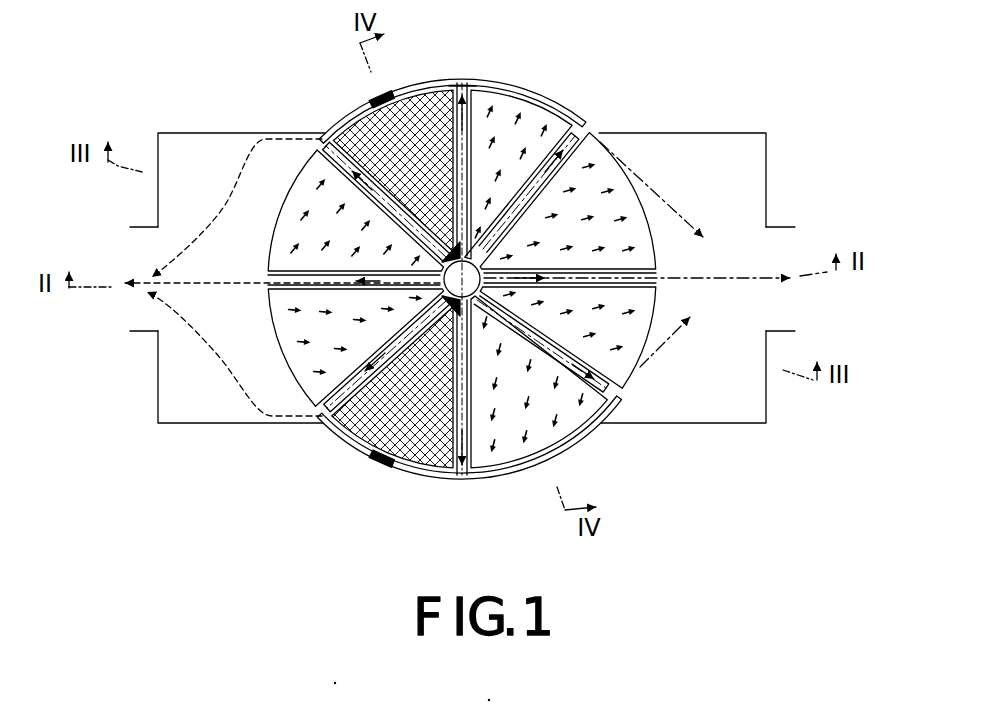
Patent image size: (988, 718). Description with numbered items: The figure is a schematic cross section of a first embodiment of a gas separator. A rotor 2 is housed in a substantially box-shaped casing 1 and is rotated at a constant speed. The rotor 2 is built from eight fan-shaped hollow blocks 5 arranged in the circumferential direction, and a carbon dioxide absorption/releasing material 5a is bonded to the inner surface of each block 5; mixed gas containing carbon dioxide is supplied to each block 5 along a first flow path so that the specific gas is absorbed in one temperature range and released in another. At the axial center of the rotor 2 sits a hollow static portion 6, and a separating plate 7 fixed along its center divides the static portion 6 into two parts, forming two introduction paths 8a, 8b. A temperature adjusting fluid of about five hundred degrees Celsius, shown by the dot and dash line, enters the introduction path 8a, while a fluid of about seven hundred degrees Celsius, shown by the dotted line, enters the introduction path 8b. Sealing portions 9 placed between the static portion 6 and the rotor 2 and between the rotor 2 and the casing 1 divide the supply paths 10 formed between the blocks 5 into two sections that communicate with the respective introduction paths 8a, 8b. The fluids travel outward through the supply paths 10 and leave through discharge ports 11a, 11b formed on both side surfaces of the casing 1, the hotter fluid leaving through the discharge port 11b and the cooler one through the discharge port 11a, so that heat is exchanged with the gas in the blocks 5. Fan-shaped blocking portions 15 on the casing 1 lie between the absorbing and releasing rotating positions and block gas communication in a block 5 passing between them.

The casing 1 is at (742, 133).
The rotor 2 is at (540, 99).
The hollow block 5 is at (327, 230).
The carbon dioxide absorption/releasing material 5a is at (560, 178).
The hollow static portion 6 is at (474, 262).
The separating plate 7 is at (476, 284).
The introduction path 8a is at (597, 422).
The introduction path 8b is at (445, 290).
The sealing portion 9 is at (432, 110).
The supply path 10 is at (293, 357).
The discharge port 11a is at (791, 331).
The discharge port 11b is at (133, 331).
The blocking portion 15 is at (357, 108).